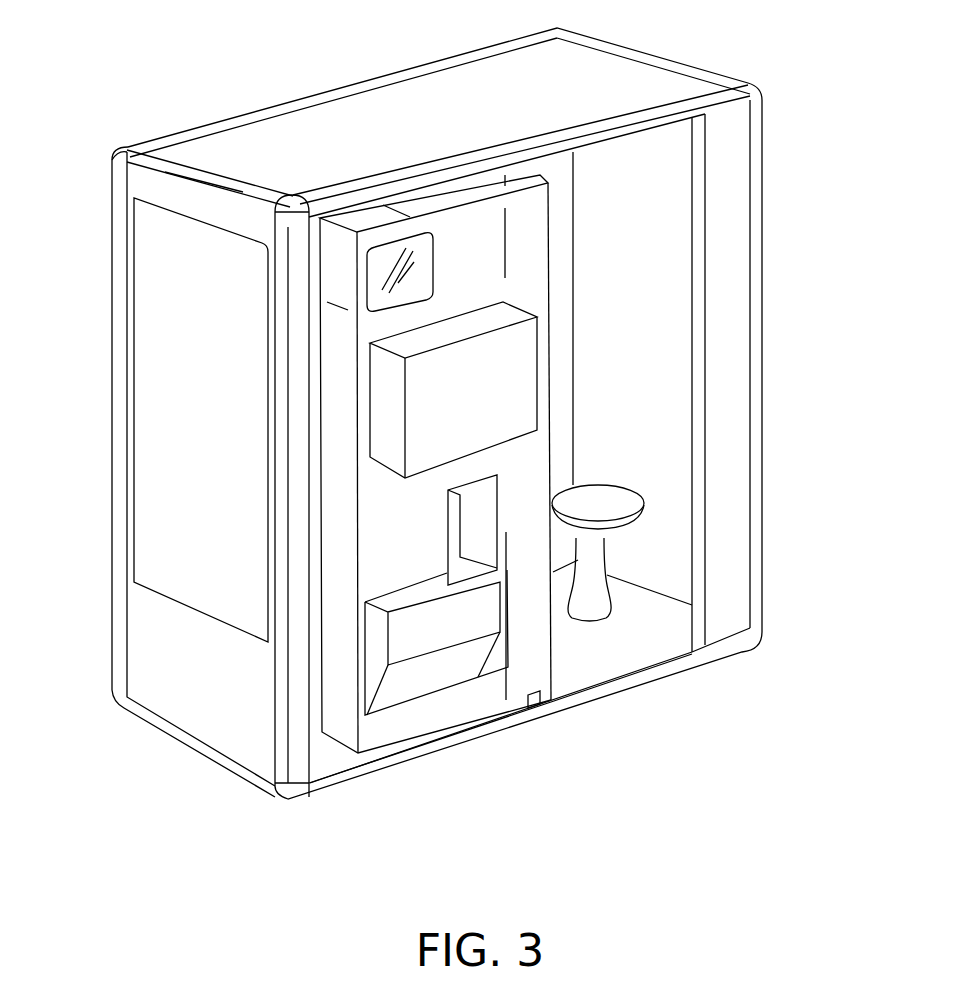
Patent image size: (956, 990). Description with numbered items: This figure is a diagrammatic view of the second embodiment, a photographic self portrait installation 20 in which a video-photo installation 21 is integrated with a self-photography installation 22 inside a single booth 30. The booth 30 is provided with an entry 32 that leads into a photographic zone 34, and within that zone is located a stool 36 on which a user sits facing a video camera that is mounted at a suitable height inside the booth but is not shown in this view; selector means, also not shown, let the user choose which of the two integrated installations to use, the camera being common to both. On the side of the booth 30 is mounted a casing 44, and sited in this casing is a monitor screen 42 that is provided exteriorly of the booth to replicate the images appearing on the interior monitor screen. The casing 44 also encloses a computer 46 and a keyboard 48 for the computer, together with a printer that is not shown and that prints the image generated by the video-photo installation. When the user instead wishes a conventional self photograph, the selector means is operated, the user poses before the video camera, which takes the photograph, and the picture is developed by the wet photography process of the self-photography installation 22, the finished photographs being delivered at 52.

The photographic self portrait installation 20 is at (783, 340).
The video-photo installation 21 is at (350, 686).
The self-photography installation 22 is at (233, 483).
The booth 30 is at (560, 101).
The entry 32 is at (647, 373).
The photographic zone 34 is at (613, 282).
The stool 36 is at (598, 600).
The monitor screen 42 is at (383, 273).
The casing 44 is at (448, 197).
The computer 46 is at (447, 423).
The keyboard 48 is at (462, 638).
The photograph delivery point 52 is at (482, 545).